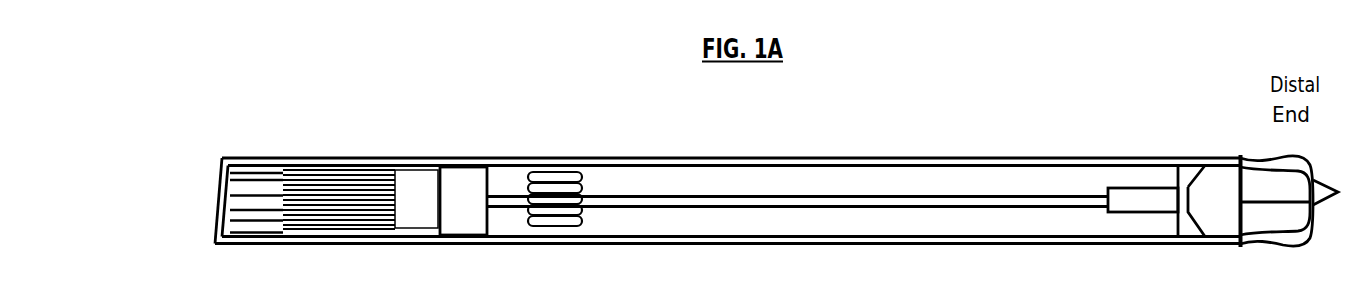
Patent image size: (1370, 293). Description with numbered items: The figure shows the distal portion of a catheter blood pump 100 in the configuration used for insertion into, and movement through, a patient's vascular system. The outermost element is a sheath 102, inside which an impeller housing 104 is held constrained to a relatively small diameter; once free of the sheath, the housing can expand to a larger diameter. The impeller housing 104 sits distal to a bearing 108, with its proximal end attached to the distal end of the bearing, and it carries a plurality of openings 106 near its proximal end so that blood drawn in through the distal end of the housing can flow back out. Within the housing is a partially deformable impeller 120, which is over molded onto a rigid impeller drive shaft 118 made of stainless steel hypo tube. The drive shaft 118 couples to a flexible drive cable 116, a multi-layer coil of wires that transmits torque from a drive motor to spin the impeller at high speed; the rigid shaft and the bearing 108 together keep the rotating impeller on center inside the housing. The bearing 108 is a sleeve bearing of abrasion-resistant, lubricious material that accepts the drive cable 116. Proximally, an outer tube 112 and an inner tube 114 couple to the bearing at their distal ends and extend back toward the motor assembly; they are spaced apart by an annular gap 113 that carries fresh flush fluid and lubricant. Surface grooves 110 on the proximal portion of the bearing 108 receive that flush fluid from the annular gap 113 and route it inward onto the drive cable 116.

The catheter blood pump 100 is at (1148, 96).
The sheath 102 is at (937, 157).
The impeller housing 104 is at (852, 163).
The openings 106 is at (566, 178).
The bearing 108 is at (468, 192).
The surface grooves 110 is at (382, 185).
The outer tube 112 is at (350, 167).
The annular gap 113 is at (262, 177).
The inner tube 114 is at (238, 180).
The drive cable 116 is at (238, 200).
The impeller drive shaft 118 is at (1152, 205).
The partially deformable impeller 120 is at (1273, 162).